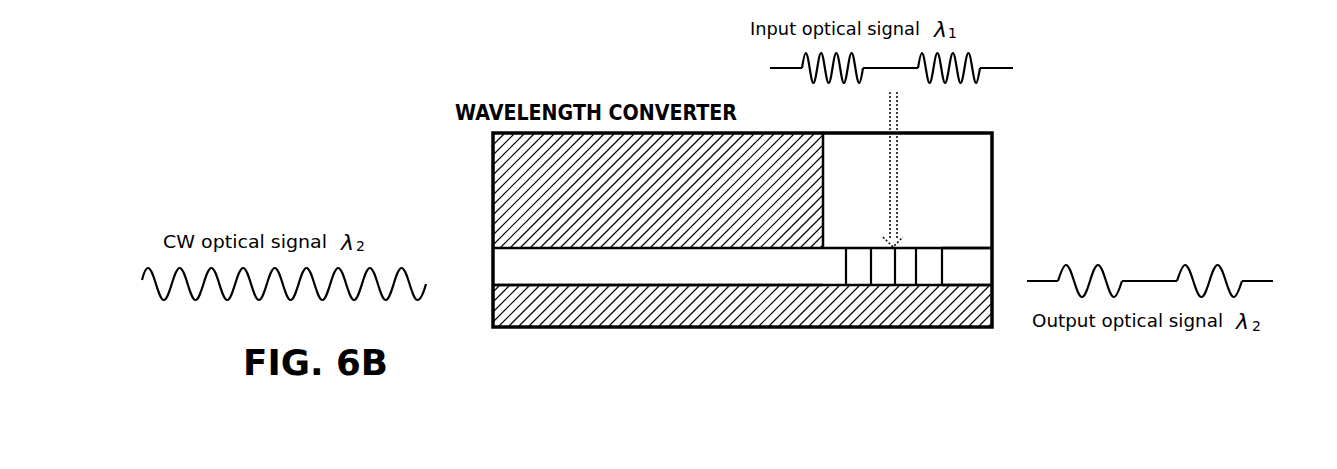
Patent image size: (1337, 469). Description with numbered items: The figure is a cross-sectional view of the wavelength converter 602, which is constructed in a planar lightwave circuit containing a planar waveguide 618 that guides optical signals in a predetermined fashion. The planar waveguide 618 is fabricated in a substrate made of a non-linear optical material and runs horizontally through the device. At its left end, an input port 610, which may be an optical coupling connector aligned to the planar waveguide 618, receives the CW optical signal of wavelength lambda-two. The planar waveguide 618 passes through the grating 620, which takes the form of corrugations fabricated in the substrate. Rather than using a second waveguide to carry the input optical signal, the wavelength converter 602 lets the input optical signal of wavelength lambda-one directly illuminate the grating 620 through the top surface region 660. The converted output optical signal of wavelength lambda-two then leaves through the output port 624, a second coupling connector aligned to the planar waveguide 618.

The wavelength converter 602 is at (808, 218).
The input port 610 is at (490, 272).
The planar waveguide 618 is at (702, 272).
The grating 620 is at (835, 287).
The output port 624 is at (998, 262).
The top surface region 660 is at (970, 170).